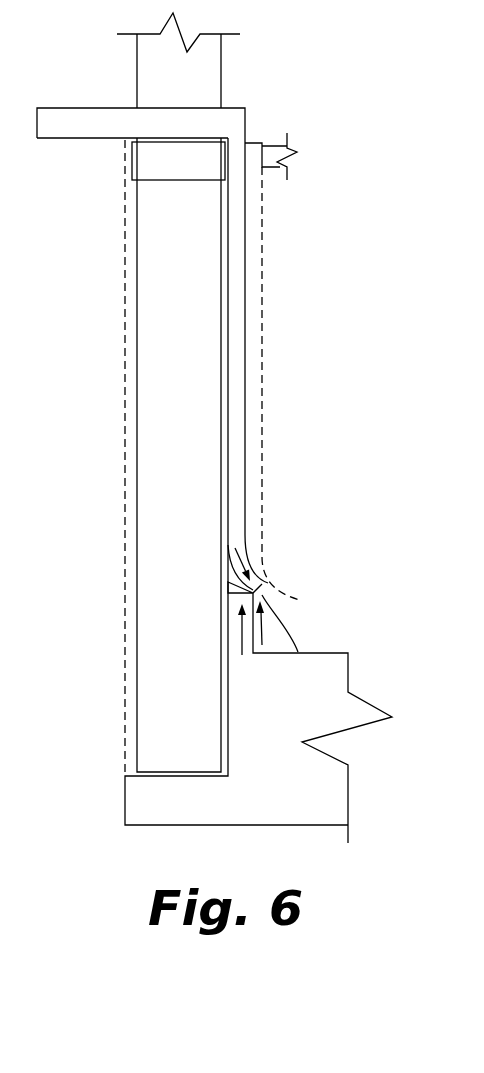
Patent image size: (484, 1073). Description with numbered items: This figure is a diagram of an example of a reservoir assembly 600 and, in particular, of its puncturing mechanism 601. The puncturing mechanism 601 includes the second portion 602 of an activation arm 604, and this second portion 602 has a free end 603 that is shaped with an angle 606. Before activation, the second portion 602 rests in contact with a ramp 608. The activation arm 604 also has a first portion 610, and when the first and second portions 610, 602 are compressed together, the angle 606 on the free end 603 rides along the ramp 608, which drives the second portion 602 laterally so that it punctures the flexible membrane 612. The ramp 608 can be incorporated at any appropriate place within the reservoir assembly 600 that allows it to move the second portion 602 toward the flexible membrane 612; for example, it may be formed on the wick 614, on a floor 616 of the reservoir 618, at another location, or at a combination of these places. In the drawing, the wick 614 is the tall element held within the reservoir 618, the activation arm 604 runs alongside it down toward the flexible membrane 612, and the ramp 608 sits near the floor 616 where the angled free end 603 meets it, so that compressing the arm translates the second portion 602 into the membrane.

The reservoir assembly 600 is at (342, 282).
The puncturing mechanism 601 is at (283, 552).
The second portion 602 is at (262, 645).
The free end 603 is at (262, 584).
The activation arm 604 is at (245, 383).
The angle 606 is at (288, 639).
The ramp 608 is at (250, 593).
The first portion 610 is at (258, 106).
The flexible membrane 612 is at (262, 198).
The wick 614 is at (198, 309).
The floor 616 is at (325, 653).
The reservoir 618 is at (97, 702).